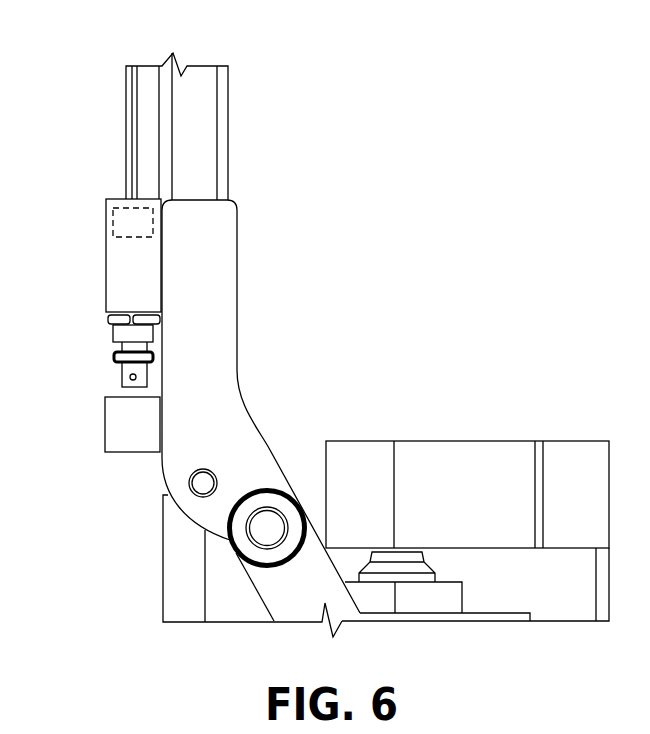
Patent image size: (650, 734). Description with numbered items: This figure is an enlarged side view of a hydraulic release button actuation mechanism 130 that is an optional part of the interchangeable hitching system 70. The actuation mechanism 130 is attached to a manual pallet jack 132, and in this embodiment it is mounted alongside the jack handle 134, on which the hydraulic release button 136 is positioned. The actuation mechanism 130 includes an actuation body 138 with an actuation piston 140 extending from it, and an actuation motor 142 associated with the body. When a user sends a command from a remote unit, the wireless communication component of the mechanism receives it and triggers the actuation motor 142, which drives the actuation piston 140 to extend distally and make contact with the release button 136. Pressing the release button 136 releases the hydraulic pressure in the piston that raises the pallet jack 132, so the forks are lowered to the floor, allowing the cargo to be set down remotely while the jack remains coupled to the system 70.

The interchangeable hitching system 70 is at (73, 98).
The actuation mechanism 130 is at (75, 237).
The pallet jack 132 is at (467, 415).
The jack handle 134 is at (198, 163).
The hydraulic release button 136 is at (120, 438).
The actuation body 138 is at (113, 298).
The actuation piston 140 is at (123, 377).
The actuation motor 142 is at (125, 202).